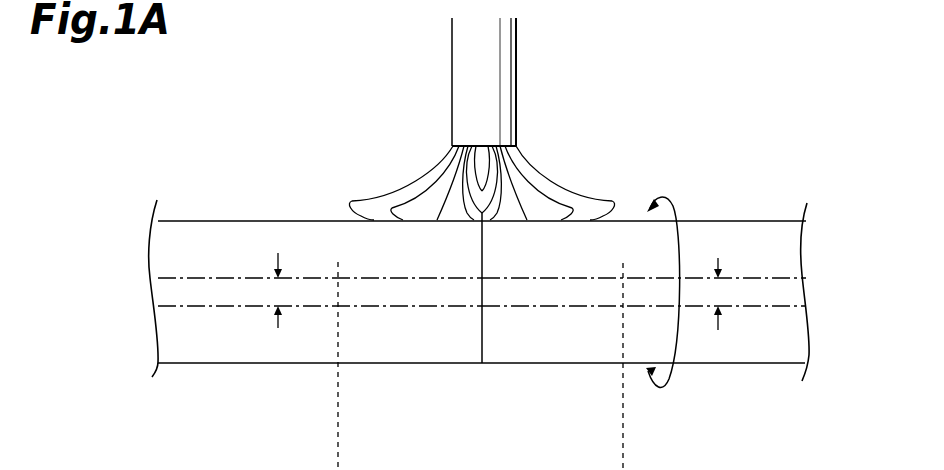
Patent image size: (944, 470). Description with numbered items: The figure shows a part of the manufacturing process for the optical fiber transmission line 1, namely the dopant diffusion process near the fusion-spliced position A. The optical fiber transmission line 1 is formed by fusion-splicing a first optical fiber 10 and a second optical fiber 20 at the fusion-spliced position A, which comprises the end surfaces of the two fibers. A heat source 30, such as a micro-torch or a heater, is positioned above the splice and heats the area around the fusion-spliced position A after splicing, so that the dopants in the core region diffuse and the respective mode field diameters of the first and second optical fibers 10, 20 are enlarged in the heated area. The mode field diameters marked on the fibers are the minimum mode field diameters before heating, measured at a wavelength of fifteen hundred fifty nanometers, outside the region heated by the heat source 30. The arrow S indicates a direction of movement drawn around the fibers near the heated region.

The optical fiber transmission line 1 is at (722, 167).
The first optical fiber 10 is at (202, 222).
The second optical fiber 20 is at (783, 226).
The heat source 30 is at (510, 77).
The fusion-spliced position A is at (482, 363).
The rotation direction S is at (671, 199).